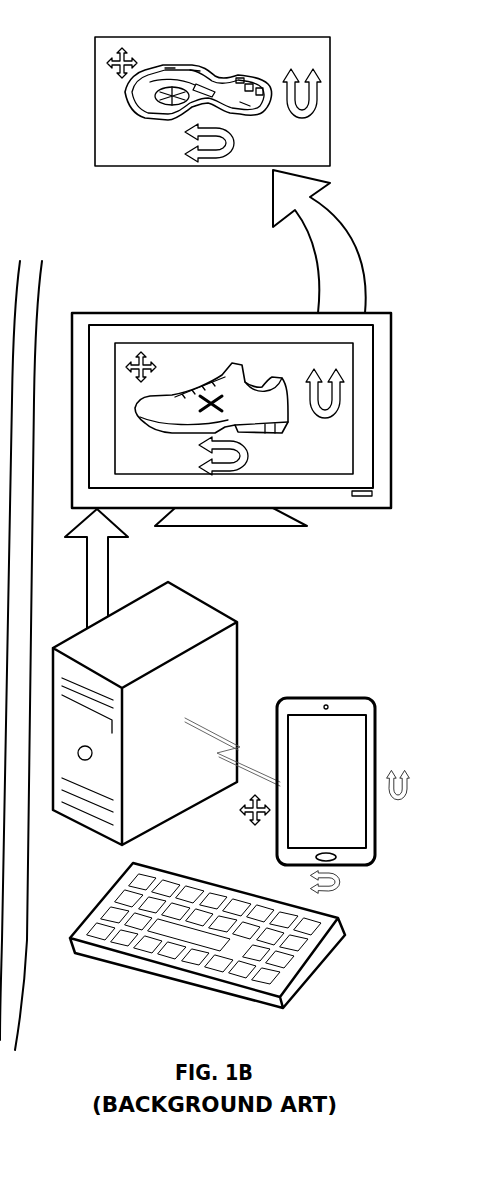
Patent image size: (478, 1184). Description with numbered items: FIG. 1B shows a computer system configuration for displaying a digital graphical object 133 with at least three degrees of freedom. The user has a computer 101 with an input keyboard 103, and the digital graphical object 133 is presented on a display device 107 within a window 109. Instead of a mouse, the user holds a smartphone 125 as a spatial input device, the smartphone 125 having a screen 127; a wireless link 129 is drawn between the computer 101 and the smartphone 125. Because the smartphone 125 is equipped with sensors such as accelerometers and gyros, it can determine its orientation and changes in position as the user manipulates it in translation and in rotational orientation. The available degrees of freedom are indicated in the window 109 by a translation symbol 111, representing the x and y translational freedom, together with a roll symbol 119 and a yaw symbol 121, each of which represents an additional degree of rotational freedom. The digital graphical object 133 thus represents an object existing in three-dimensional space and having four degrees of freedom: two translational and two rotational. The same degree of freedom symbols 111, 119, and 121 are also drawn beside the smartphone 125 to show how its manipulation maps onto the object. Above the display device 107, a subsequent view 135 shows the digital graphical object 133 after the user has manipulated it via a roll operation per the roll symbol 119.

The computer 101 is at (145, 635).
The input keyboard 103 is at (337, 917).
The display device 107 is at (392, 463).
The window 109 is at (95, 139).
The translation symbol 111 is at (108, 76).
The roll symbol 119 is at (318, 107).
The yaw symbol 121 is at (212, 160).
The smartphone 125 is at (350, 699).
The screen 127 is at (347, 733).
The wireless connection 129 is at (237, 718).
The digital graphical object 133 is at (175, 66).
The subsequent view 135 is at (63, 180).